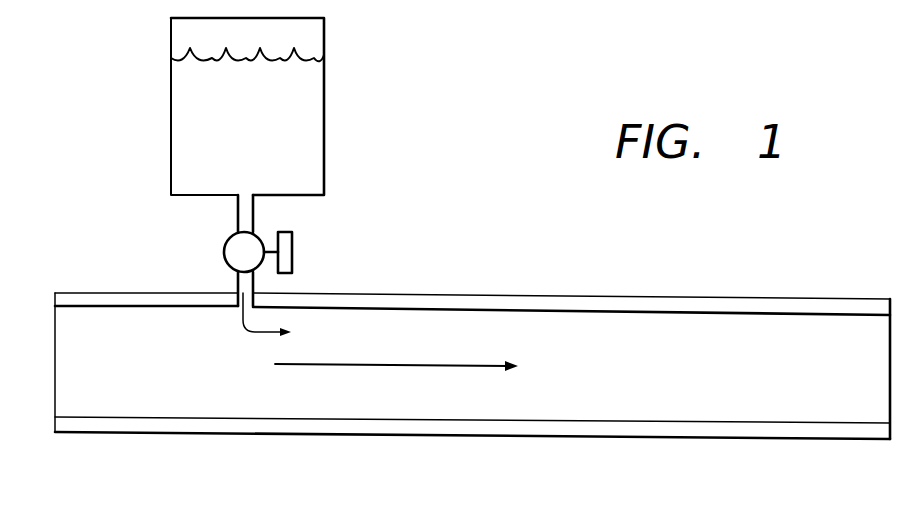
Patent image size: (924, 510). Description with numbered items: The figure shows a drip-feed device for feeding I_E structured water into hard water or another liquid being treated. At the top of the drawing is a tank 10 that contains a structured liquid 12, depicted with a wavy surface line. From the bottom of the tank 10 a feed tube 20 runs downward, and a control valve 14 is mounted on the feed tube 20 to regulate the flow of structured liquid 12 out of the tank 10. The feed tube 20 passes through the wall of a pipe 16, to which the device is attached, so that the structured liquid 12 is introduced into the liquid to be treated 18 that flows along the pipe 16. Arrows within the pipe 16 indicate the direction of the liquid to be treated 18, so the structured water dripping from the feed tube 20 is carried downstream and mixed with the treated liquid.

The tank 10 is at (326, 100).
The structured liquid 12 is at (190, 104).
The control valve 14 is at (293, 250).
The pipe 16 is at (425, 294).
The liquid to be treated 18 is at (112, 395).
The feed tube 20 is at (232, 285).